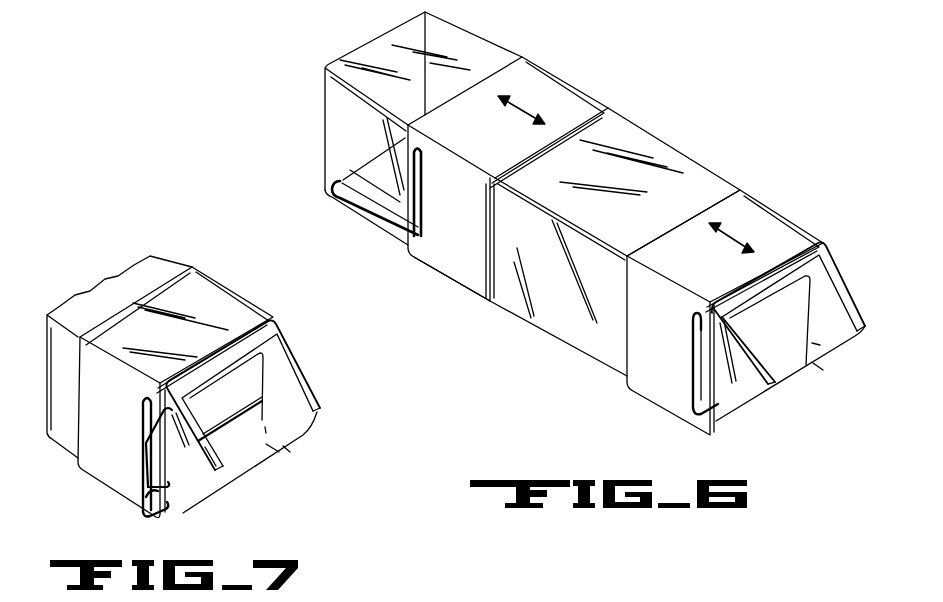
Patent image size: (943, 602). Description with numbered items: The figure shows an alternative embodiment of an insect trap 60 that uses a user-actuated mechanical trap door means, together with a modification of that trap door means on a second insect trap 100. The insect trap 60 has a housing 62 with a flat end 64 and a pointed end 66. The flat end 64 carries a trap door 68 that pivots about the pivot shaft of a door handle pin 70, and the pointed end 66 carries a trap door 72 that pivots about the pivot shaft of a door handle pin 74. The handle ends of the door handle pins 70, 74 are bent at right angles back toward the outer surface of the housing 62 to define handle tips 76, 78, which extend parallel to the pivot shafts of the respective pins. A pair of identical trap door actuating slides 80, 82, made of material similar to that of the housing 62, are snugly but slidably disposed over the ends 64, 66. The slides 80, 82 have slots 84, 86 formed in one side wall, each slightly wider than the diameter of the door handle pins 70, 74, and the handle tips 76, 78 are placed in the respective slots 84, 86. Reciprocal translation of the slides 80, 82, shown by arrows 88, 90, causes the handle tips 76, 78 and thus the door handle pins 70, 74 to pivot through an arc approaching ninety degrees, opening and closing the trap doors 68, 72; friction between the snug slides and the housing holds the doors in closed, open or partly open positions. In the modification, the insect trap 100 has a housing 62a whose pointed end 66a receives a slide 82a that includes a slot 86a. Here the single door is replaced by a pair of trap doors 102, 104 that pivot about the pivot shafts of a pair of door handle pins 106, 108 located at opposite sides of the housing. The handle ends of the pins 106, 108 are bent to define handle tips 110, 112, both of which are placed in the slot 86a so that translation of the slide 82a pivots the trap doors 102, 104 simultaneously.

In FIG. 6, the insect trap 60 is at (587, 223).
In FIG. 6, the housing 62 is at (658, 151).
In FIG. 6, the flat end 64 is at (450, 19).
In FIG. 6, the pointed end 66 is at (858, 290).
In FIG. 6, the trap door 68 is at (378, 160).
In FIG. 6, the door handle pin 70 is at (342, 193).
In FIG. 6, the trap door 72 is at (785, 370).
In FIG. 6, the door handle pin 74 is at (694, 414).
In FIG. 6, the handle tip 76 is at (452, 257).
In FIG. 6, the handle tip 78 is at (690, 316).
In FIG. 6, the trap door actuating slide 80 is at (560, 83).
In FIG. 6, the trap door actuating slide 82 is at (767, 199).
In FIG. 6, the slot 84 is at (423, 165).
In FIG. 6, the slot 86 is at (688, 377).
In FIG. 6, the arrow 88 is at (530, 113).
In FIG. 6, the arrow 90 is at (745, 240).
In FIG. 7, the insect trap 100 is at (212, 358).
In FIG. 7, the housing 62a is at (120, 272).
In FIG. 7, the slide 82a is at (228, 292).
In FIG. 7, the slot 86a is at (146, 393).
In FIG. 7, the pointed end 66a is at (316, 384).
In FIG. 7, the trap door 102 is at (260, 372).
In FIG. 7, the trap door 104 is at (245, 448).
In FIG. 7, the door handle pin 106 is at (142, 421).
In FIG. 7, the door handle pin 108 is at (144, 494).
In FIG. 7, the handle tip 110 is at (147, 444).
In FIG. 7, the handle tip 112 is at (150, 455).